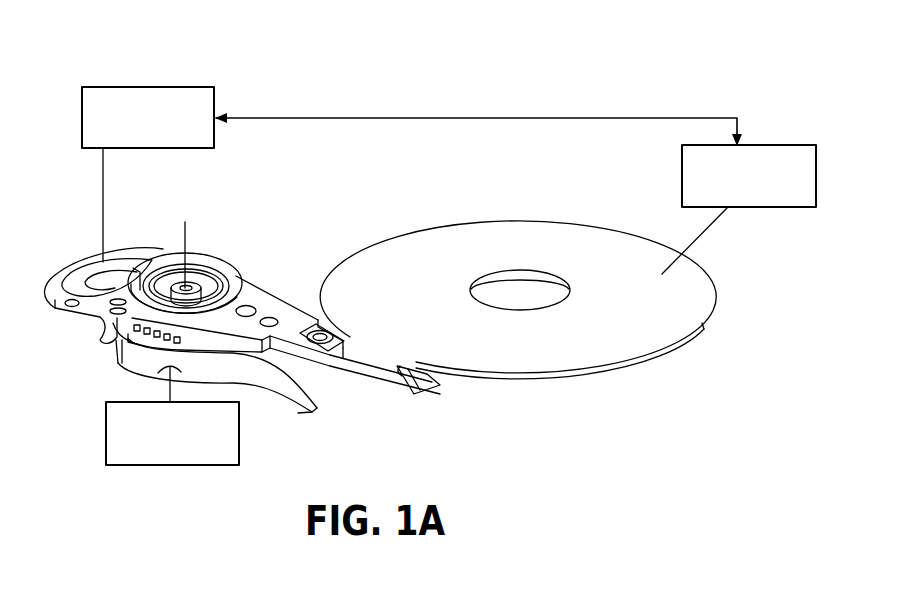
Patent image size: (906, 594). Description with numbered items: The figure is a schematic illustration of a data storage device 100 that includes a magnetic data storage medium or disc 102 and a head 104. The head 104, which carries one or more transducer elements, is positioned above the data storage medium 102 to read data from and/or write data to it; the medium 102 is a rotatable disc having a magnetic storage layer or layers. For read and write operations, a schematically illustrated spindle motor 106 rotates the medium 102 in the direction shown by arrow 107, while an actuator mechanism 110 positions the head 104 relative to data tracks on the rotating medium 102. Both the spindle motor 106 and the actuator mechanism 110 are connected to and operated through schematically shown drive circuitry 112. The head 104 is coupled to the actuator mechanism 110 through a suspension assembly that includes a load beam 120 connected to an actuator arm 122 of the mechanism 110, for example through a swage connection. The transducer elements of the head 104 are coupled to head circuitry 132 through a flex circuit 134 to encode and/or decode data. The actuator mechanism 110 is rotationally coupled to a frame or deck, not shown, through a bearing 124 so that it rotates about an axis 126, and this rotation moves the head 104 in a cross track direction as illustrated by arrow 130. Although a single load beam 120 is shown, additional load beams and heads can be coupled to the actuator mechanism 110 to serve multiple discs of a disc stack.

The data storage device 100 is at (643, 84).
The magnetic data storage medium 102 is at (606, 250).
The head 104 is at (438, 388).
The spindle motor 106 is at (783, 145).
The arrow 107 is at (402, 262).
The actuator mechanism 110 is at (205, 246).
The drive circuitry 112 is at (188, 87).
The load beam 120 is at (348, 352).
The actuator arm 122 is at (277, 290).
The bearing 124 is at (186, 290).
The axis 126 is at (184, 238).
The arrow 130 is at (400, 410).
The head circuitry 132 is at (106, 430).
The flex circuit 134 is at (216, 375).